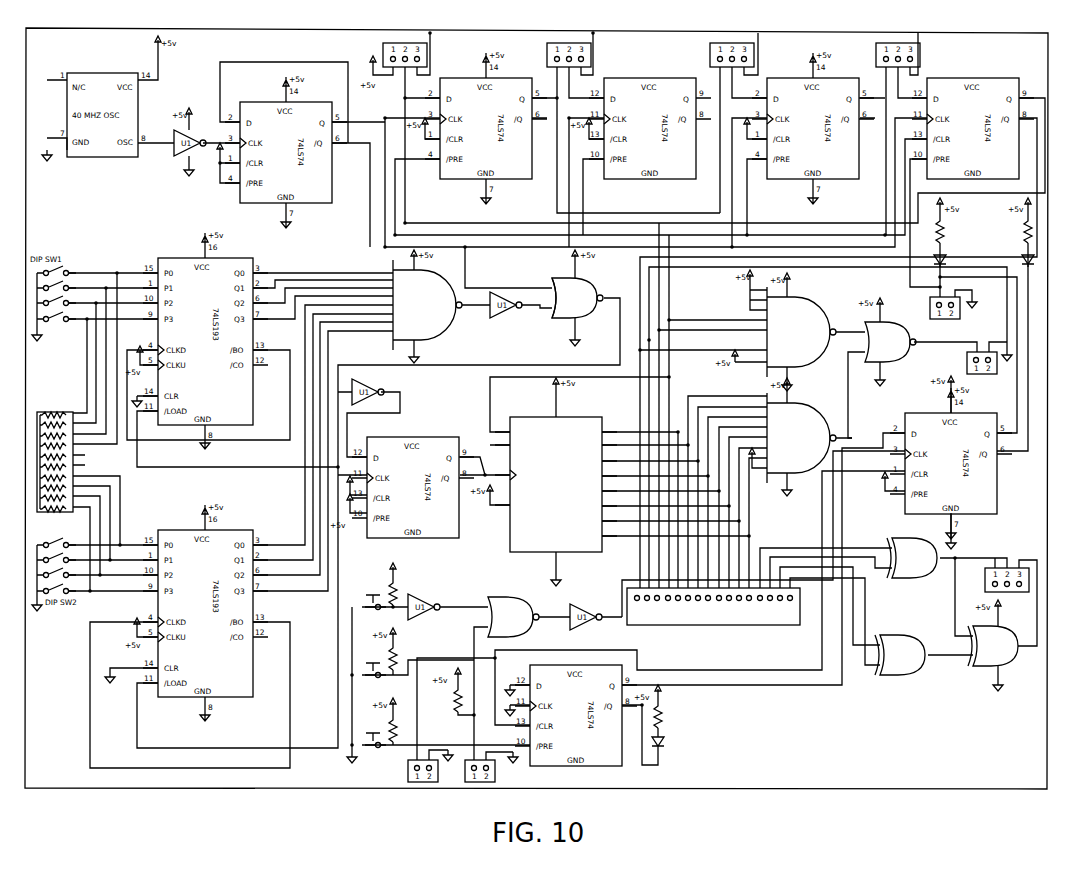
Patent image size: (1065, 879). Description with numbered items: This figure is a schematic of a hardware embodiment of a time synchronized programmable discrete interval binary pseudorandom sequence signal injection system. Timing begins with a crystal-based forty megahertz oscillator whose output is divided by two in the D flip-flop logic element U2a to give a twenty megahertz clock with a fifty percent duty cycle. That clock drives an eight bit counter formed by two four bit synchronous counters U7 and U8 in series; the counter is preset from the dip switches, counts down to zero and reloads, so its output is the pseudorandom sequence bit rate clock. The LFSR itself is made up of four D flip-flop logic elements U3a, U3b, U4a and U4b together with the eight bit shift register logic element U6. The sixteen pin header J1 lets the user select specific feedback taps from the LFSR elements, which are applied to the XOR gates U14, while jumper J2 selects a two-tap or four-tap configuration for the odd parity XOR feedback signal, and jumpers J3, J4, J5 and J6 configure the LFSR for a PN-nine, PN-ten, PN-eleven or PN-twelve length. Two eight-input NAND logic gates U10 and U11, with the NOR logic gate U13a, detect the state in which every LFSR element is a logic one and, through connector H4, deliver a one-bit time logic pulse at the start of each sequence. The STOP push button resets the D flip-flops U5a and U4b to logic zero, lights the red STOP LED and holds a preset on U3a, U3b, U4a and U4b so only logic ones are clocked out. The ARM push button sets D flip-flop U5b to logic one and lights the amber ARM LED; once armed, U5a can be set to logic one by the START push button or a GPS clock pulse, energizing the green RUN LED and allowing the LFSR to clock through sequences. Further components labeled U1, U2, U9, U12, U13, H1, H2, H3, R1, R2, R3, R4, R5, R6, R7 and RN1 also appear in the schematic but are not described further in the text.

The 74LS04 hex inverter U1 is at (374, 379).
The 74LS74 flip-flop U2 is at (413, 481).
The D flip-flop logic element U2a is at (286, 151).
The D flip-flop logic element U3a is at (486, 127).
The D flip-flop logic element U3b is at (650, 122).
The D flip-flop logic element U4a is at (813, 127).
The D flip-flop logic element U4b is at (973, 122).
The D flip-flop U5a is at (951, 462).
The D flip-flop U5b is at (576, 709).
The eight bit shift register logic element U6 is at (556, 486).
The four bit synchronous counter U7 is at (205, 340).
The four bit synchronous counter U8 is at (205, 612).
The 74LS30 8-input NAND gate U9 is at (429, 306).
The eight-input NAND logic gate U10 is at (803, 332).
The eight-input NAND logic gate U11 is at (803, 438).
The 74LS00 NAND gate U12 is at (577, 301).
The 74LS02 NOR gate U13 is at (513, 617).
The NOR logic gate U13a is at (889, 343).
The XOR gates U14 is at (945, 609).
The sixteen pin header J1 is at (719, 613).
The jumper J2 is at (998, 580).
The jumper J3 is at (574, 55).
The jumper J4 is at (737, 55).
The jumper J5 is at (901, 55).
The jumper J6 is at (410, 55).
The GPS clock in header H1 is at (508, 771).
The PRS out header H2 is at (399, 771).
The SEQ START header H3 is at (942, 314).
The connector H4 is at (974, 371).
The start pull-up resistor R1 is at (381, 604).
The stop pull-up resistor R2 is at (382, 668).
The arm pull-up resistor R3 is at (382, 738).
The amber LED resistor R4 is at (655, 745).
The red LED resistor R5 is at (947, 244).
The green LED resistor R6 is at (1009, 244).
The GPS clock pull-up resistor R7 is at (451, 699).
The resistor network RN1 is at (60, 469).